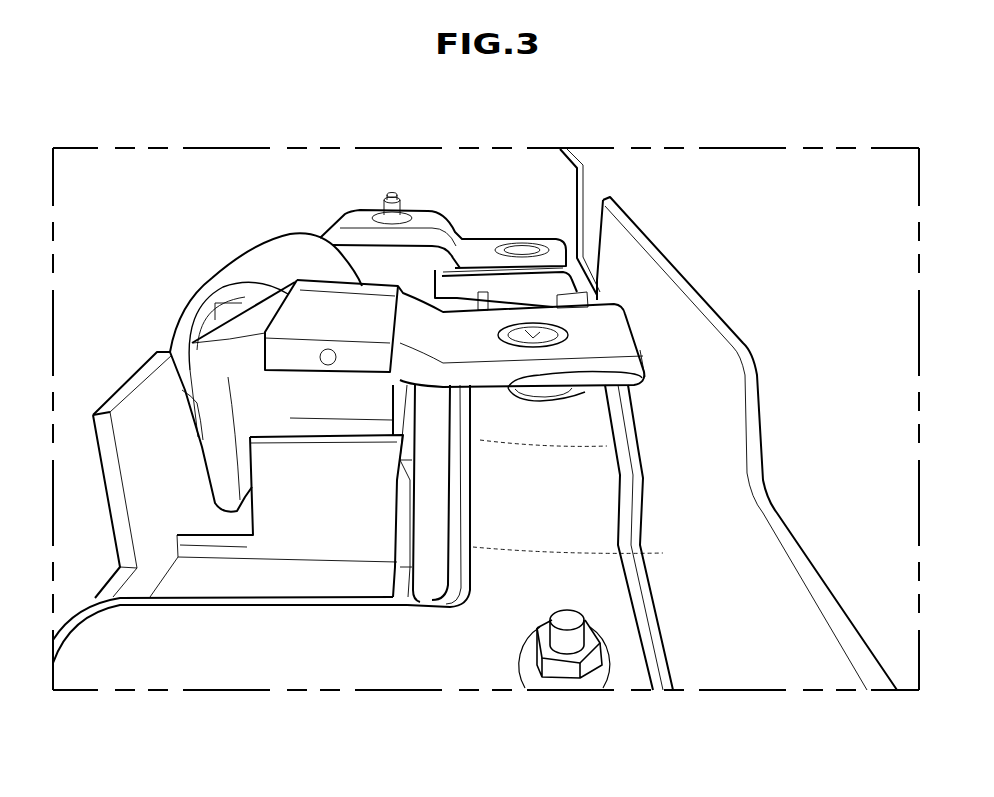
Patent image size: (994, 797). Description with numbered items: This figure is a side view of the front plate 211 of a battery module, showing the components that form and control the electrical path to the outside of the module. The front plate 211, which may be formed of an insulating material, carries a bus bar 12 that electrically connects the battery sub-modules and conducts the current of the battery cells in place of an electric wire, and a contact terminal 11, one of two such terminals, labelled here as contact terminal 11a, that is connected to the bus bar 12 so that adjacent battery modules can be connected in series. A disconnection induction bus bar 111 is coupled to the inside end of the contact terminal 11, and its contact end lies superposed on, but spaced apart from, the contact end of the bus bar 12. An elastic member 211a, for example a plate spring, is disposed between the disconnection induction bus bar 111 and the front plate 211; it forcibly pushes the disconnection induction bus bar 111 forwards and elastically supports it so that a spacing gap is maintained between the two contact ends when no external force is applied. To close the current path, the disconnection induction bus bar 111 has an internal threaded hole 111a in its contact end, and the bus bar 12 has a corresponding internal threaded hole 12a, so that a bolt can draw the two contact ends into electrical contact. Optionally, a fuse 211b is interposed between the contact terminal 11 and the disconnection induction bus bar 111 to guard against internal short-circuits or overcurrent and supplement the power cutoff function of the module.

The contact terminal 11 is at (462, 198).
The contact terminal 11a is at (492, 229).
The disconnection induction bus bar 111 is at (528, 244).
The internal threaded hole 111a is at (540, 328).
The bus bar 12 is at (584, 521).
The internal threaded hole 12a is at (548, 384).
The front plate 211 is at (366, 660).
The elastic member 211a is at (333, 317).
The fuse 211b is at (243, 263).